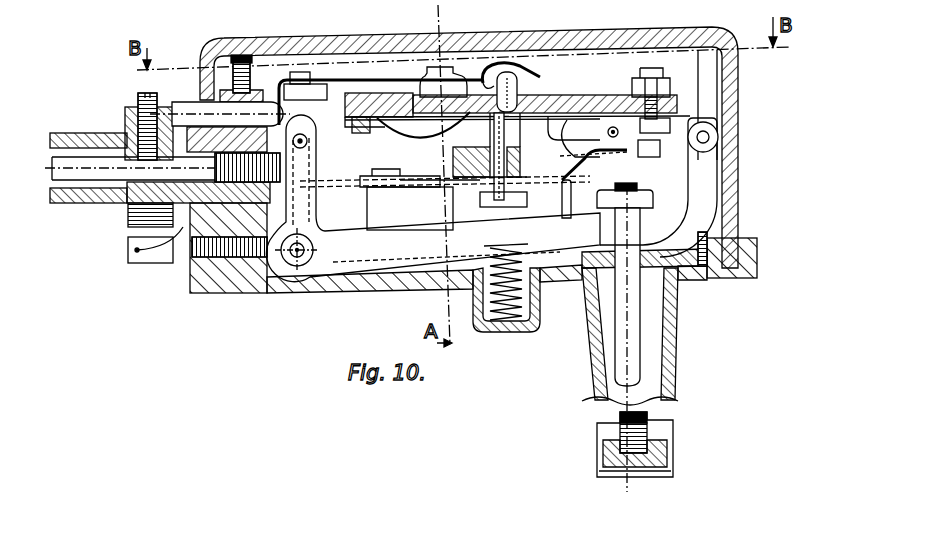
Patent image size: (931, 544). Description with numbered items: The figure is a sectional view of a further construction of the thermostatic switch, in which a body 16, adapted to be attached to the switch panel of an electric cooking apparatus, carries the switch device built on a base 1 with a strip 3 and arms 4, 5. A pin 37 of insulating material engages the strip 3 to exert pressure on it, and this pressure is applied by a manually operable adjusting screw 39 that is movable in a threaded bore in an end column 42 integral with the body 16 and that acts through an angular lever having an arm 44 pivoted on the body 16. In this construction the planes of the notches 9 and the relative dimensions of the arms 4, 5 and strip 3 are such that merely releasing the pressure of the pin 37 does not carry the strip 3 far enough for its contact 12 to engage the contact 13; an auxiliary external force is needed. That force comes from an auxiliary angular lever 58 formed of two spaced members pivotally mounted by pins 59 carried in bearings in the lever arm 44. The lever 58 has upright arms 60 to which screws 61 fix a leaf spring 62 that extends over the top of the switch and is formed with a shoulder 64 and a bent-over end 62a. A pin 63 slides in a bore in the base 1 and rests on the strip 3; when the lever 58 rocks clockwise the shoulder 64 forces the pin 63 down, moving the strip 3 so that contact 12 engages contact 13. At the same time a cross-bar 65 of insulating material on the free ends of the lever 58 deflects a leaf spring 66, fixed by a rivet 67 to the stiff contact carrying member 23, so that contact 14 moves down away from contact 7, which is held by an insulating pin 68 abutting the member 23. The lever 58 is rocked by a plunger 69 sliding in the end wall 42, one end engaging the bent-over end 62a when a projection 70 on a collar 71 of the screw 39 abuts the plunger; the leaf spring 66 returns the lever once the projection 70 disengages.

The base 1 is at (544, 62).
The strip 3 is at (572, 125).
The arm 4 is at (643, 130).
The arm 5 is at (398, 133).
The contact 7 is at (660, 110).
The notches 9 is at (545, 107).
The contact 12 is at (357, 127).
The contact 13 is at (382, 186).
The contact 14 is at (640, 155).
The body 16 is at (245, 290).
The contact carrying member 23 is at (596, 108).
The pin 37 is at (505, 128).
The adjusting screw 39 is at (125, 128).
The end column 42 is at (187, 235).
The arm 44 is at (399, 250).
The auxiliary angular lever 58 is at (687, 208).
The pins 59 is at (340, 246).
The upright arms 60 is at (314, 90).
The screws 61 is at (300, 72).
The leaf spring 62 is at (362, 92).
The bent-over end 62a is at (276, 95).
The pin 63 is at (508, 74).
The shoulder 64 is at (481, 68).
The cross-bar 65 is at (718, 137).
The leaf spring 66 is at (690, 172).
The rivet 67 is at (493, 207).
The pin 68 is at (738, 60).
The plunger 69 is at (187, 100).
The projection 70 is at (137, 250).
The collar 71 is at (123, 107).